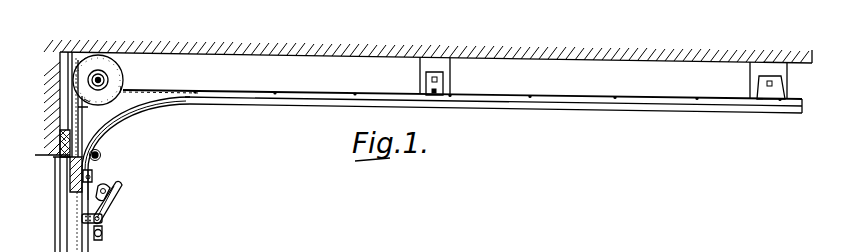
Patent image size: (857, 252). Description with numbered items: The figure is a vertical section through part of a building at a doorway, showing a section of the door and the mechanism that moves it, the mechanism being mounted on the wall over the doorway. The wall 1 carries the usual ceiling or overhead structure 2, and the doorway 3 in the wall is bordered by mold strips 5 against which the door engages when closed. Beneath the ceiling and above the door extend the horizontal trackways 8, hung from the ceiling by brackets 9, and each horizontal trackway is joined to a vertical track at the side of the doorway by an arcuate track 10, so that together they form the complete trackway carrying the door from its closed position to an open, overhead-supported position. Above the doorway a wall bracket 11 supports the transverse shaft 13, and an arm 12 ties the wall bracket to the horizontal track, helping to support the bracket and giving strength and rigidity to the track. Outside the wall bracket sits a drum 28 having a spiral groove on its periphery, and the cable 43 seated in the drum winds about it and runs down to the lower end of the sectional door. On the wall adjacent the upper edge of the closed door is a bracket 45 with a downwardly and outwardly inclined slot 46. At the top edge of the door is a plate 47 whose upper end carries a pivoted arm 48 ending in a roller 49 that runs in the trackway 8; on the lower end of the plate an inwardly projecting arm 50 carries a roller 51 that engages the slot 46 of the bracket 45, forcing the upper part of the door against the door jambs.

The wall 1 is at (58, 125).
The ceiling or overhead structure 2 is at (248, 45).
The doorway 3 is at (66, 160).
The mold strips 5 is at (58, 180).
The trackways 8 is at (591, 111).
The brackets 9 is at (452, 85).
The arcuate track 10 is at (143, 116).
The wall bracket 11 is at (89, 126).
The arm 12 is at (144, 91).
The transverse shaft 13 is at (99, 76).
The drum 28 is at (92, 62).
The cable 43 is at (120, 132).
The bracket 45 is at (122, 212).
The slot 46 is at (112, 192).
The plate 47 is at (92, 176).
The arm 48 is at (92, 172).
The roller 49 is at (101, 153).
The inwardly projecting arm 50 is at (82, 219).
The roller 51 is at (104, 232).